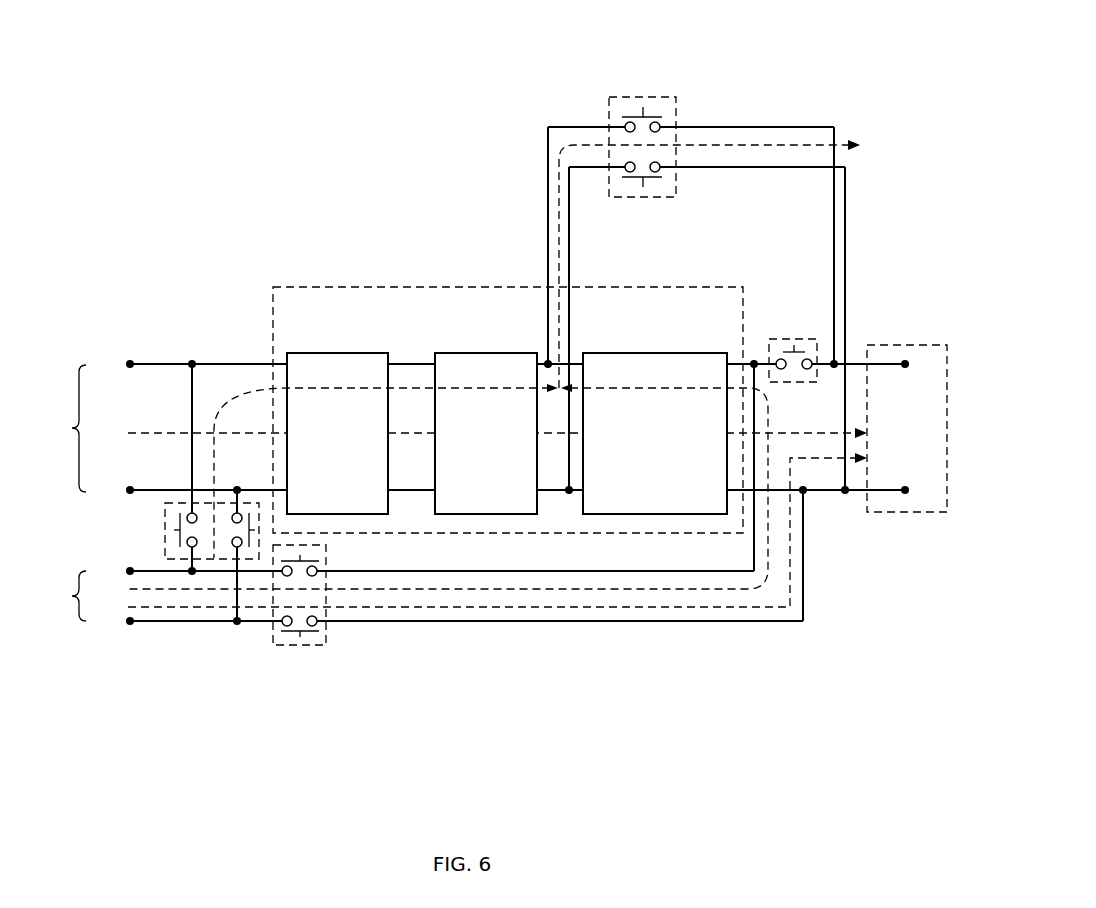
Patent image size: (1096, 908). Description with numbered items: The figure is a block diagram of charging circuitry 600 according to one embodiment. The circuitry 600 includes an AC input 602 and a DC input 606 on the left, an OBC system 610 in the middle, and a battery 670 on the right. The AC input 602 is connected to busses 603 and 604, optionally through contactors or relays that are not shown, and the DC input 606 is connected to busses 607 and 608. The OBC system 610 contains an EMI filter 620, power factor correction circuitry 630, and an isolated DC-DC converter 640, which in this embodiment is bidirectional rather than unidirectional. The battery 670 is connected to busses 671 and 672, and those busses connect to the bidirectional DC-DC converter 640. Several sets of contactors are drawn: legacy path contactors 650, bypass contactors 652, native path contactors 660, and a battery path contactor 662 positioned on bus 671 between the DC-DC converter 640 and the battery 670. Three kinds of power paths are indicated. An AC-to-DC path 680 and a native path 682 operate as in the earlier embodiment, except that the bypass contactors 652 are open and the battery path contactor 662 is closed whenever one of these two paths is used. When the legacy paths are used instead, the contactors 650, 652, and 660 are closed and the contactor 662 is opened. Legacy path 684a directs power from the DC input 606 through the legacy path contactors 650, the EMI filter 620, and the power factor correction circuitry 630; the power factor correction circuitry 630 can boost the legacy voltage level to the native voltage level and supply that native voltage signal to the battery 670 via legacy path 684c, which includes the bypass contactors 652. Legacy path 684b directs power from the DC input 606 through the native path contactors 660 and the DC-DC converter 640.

The circuitry 600 is at (118, 125).
The AC input 602 is at (74, 428).
The bus 603 is at (150, 364).
The bus 604 is at (157, 490).
The DC input 606 is at (74, 596).
The bus 607 is at (130, 569).
The bus 608 is at (208, 621).
The OBC system 610 is at (487, 287).
The EMI filter 620 is at (337, 353).
The power factor correction circuitry 630 is at (487, 353).
The isolated DC-DC converter 640 is at (655, 353).
The legacy path contactors 650 is at (165, 520).
The bypass contactors 652 is at (645, 97).
The native path contactors 660 is at (307, 645).
The battery path contactor 662 is at (801, 339).
The battery 670 is at (942, 345).
The bus 671 is at (889, 364).
The bus 672 is at (825, 494).
The AC-to-DC path 680 is at (403, 433).
The native path 682 is at (668, 607).
The legacy path 684a is at (262, 386).
The legacy path 684b is at (457, 589).
The legacy path 684c is at (755, 145).